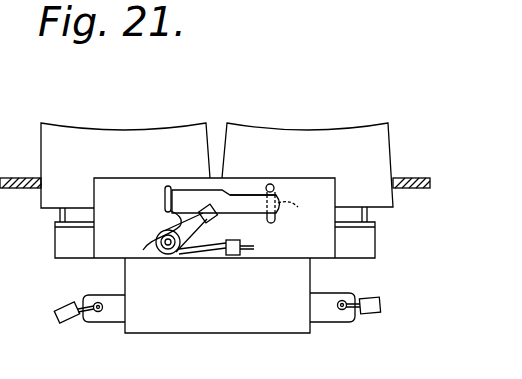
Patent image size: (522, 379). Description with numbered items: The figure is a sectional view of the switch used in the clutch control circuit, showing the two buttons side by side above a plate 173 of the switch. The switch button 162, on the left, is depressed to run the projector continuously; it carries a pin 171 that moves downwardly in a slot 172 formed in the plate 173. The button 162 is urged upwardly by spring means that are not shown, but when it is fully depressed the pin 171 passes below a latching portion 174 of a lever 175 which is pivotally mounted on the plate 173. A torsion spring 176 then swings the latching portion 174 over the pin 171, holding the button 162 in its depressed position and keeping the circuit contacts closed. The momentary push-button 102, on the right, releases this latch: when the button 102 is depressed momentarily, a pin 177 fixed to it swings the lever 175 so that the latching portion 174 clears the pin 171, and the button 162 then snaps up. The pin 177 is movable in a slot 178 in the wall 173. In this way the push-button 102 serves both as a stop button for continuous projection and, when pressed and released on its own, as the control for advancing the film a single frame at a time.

The momentary push-button 102 is at (343, 122).
The switch button 162 is at (100, 122).
The pin 171 is at (192, 163).
The slot 172 is at (164, 203).
The plate 173 is at (105, 215).
The latching portion 174 is at (143, 250).
The lever 175 is at (245, 210).
The torsion spring 176 is at (203, 254).
The pin 177 is at (273, 185).
The slot 178 is at (301, 214).